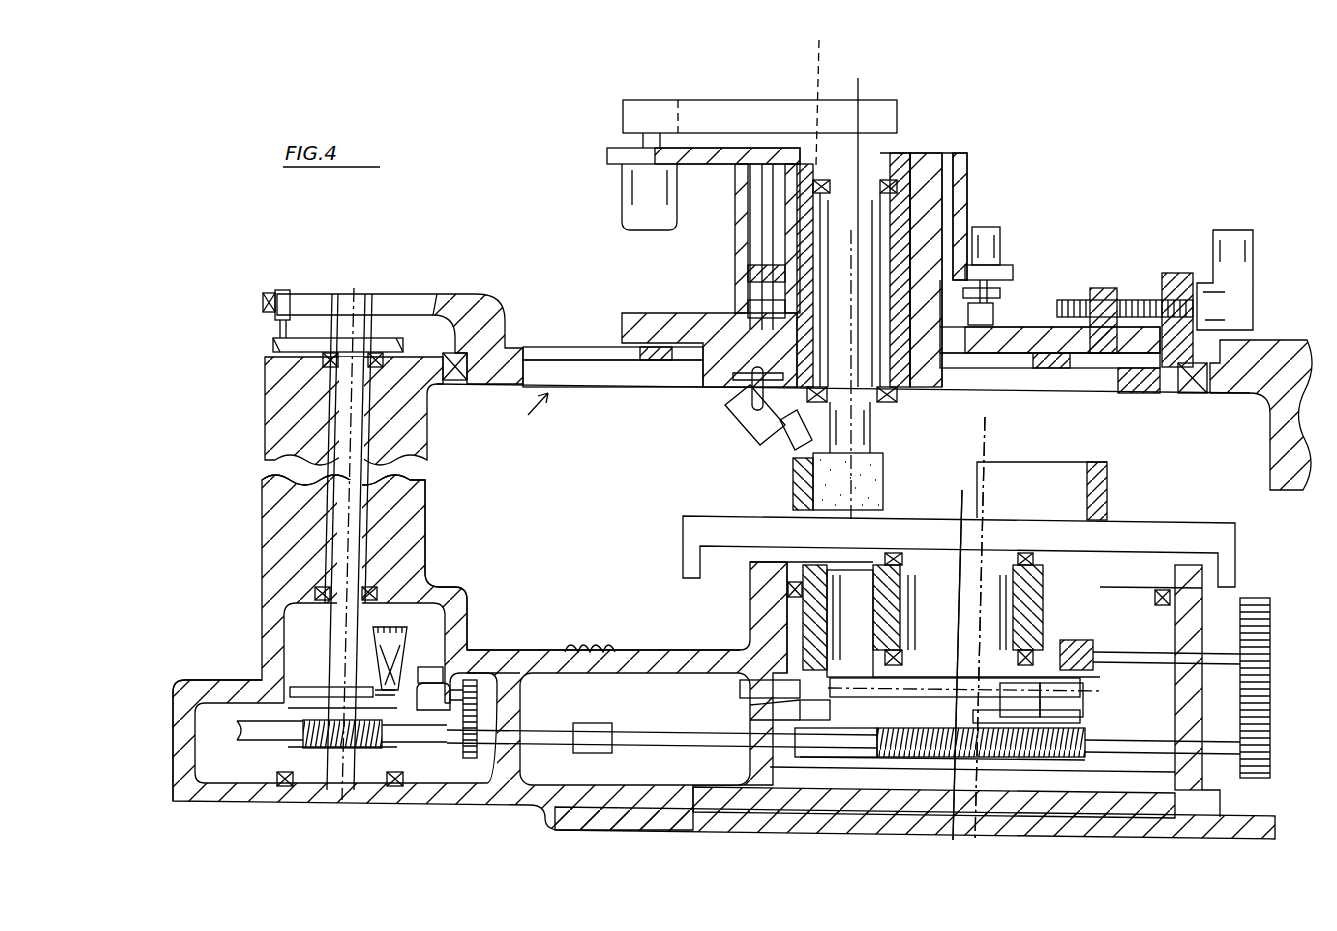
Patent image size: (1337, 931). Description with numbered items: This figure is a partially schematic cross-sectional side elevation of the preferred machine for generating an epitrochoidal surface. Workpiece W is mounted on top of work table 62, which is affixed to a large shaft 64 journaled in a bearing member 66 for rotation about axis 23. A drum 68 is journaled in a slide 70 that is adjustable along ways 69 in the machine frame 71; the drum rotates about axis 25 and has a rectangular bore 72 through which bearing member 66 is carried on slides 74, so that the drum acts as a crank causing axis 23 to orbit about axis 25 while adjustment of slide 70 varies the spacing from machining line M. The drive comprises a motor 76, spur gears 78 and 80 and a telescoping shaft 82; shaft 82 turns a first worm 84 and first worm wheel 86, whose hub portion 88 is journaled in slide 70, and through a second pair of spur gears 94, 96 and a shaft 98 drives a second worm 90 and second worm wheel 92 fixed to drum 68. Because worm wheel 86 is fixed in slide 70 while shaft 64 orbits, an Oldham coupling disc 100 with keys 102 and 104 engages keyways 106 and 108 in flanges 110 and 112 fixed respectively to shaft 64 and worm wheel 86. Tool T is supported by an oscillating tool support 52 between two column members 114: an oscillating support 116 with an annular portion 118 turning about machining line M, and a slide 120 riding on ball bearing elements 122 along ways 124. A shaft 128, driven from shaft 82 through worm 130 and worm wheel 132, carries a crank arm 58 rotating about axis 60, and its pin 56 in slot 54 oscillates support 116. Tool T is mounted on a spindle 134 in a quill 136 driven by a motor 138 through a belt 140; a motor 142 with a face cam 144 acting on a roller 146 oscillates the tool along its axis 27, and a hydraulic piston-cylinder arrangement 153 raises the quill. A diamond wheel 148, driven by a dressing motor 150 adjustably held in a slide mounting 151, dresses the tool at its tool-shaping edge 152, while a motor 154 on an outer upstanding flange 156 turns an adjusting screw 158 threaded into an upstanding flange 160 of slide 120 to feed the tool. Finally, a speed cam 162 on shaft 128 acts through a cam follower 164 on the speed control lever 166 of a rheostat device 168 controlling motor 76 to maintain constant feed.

The belt 140 is at (718, 100).
The axis of tool 27 is at (860, 95).
The machining line M is at (822, 50).
The quill 136 is at (940, 152).
The motor 138 is at (630, 182).
The hydraulic piston-cylinder arrangement 153 is at (732, 275).
The motor 142 is at (990, 235).
The face cam 144 is at (1000, 290).
The roller 146 is at (993, 310).
The outer upstanding flange 156 is at (1175, 275).
The upstanding flange 160 is at (1118, 270).
The motor 154 is at (1268, 208).
The adjusting screw 158 is at (1138, 317).
The pin 56 is at (275, 295).
The axis 60 is at (358, 290).
The slot 54 is at (405, 300).
The oscillating support 116 is at (452, 305).
The annular portion 118 is at (500, 345).
The slide 120 is at (640, 315).
The ball bearing elements 122 is at (668, 362).
The ways 124 is at (615, 362).
The crank arm 58 is at (273, 345).
The column members 114 is at (265, 425).
The oscillating tool support 52 is at (528, 415).
The slide mounting 151 is at (733, 378).
The dressing motor 150 is at (745, 420).
The spindle 134 is at (900, 390).
The tool-shaping edge 152 is at (852, 425).
The diamond wheel 148 is at (790, 470).
The tool T is at (880, 462).
The shaft 128 is at (320, 520).
The work table 62 is at (683, 530).
The axis 25 is at (985, 485).
The workpiece W is at (1107, 492).
The rheostat device 168 is at (420, 600).
The speed control lever 166 is at (440, 640).
The motor 76 is at (470, 655).
The drum 68 is at (760, 600).
The slides 74 is at (840, 575).
The shaft 64 is at (955, 584).
The bearing member 66 is at (1050, 620).
The second worm wheel 92 is at (1200, 600).
The spur gear 96 is at (1258, 615).
The shaft 98 is at (1225, 652).
The keyway 106 is at (700, 645).
The flange 110 is at (835, 660).
The second worm 90 is at (1080, 642).
The speed cam 162 is at (300, 680).
The cam follower 164 is at (372, 690).
The machine frame 71 is at (180, 690).
The axis 23 is at (937, 665).
The slide 70 is at (745, 690).
The bore 72 is at (809, 699).
The key 102 is at (1090, 703).
The disc 100 is at (1080, 712).
The spur gear 78 is at (480, 700).
The telescoping shaft 82 is at (640, 722).
The flange 112 is at (745, 720).
The key 104 is at (955, 715).
The keyway 108 is at (985, 720).
The spur gear 94 is at (1262, 750).
The worm wheel 132 is at (250, 740).
The worm 130 is at (370, 737).
The spur gear 80 is at (477, 752).
The first worm wheel 86 is at (745, 767).
The first worm 84 is at (905, 757).
The ways 69 is at (655, 805).
The hub portion 88 is at (960, 822).